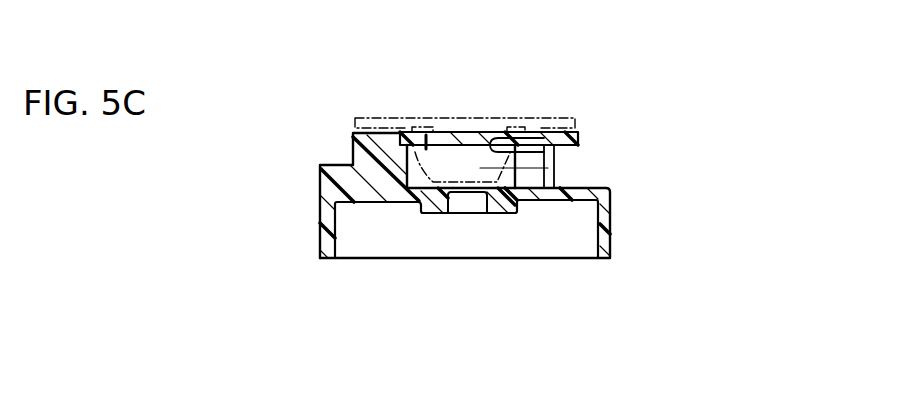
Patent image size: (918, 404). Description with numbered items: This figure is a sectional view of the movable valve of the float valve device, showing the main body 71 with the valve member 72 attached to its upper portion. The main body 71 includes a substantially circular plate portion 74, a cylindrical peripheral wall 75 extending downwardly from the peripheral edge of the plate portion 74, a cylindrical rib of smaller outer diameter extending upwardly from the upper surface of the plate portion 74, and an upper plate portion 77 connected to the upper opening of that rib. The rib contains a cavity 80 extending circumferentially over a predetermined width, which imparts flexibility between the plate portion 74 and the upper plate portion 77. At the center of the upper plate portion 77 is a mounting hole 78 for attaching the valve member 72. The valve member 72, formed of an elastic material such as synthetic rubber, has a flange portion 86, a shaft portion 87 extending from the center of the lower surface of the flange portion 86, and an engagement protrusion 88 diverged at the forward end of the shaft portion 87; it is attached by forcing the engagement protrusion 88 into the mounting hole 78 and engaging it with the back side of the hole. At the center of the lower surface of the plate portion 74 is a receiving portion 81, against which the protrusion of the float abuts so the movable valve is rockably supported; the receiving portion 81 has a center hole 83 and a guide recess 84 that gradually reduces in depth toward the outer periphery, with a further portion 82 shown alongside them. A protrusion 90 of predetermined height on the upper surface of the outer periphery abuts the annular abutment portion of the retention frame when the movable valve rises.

The main body 71 is at (640, 249).
The valve member 72 is at (562, 107).
The plate portion 74 is at (572, 202).
The peripheral wall 75 is at (607, 248).
The upper plate portion 77 is at (579, 137).
The mounting hole 78 is at (492, 150).
The cavity 80 is at (548, 167).
The receiving portion 81 is at (479, 281).
The left floor portion 82 is at (432, 212).
The center hole 83 is at (468, 200).
The guide recess 84 is at (530, 263).
The flange portion 86 is at (522, 117).
The shaft portion 87 is at (448, 133).
The engagement protrusion 88 is at (515, 176).
The protrusion 90 is at (336, 164).